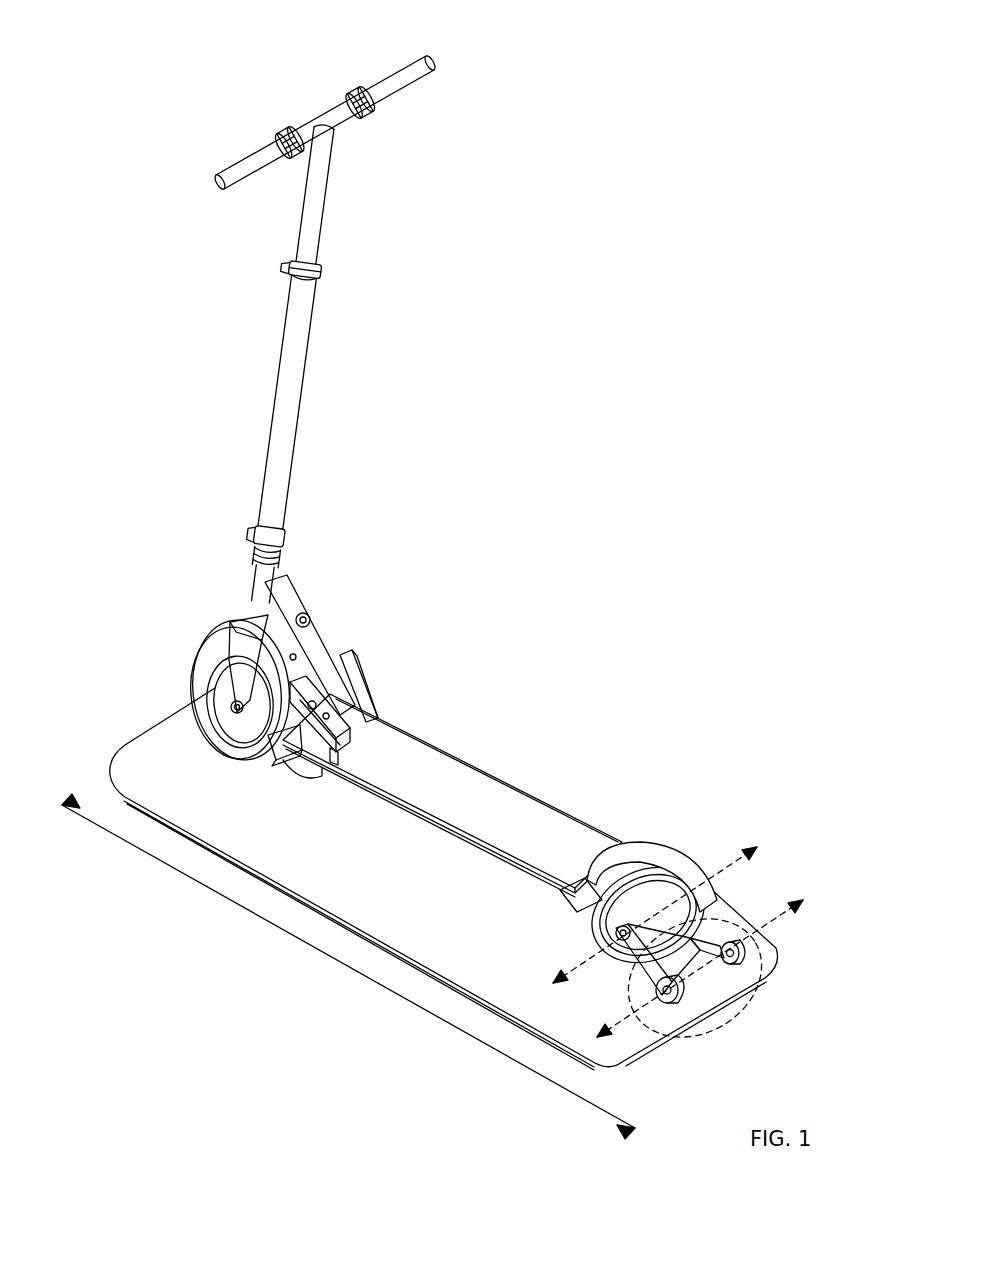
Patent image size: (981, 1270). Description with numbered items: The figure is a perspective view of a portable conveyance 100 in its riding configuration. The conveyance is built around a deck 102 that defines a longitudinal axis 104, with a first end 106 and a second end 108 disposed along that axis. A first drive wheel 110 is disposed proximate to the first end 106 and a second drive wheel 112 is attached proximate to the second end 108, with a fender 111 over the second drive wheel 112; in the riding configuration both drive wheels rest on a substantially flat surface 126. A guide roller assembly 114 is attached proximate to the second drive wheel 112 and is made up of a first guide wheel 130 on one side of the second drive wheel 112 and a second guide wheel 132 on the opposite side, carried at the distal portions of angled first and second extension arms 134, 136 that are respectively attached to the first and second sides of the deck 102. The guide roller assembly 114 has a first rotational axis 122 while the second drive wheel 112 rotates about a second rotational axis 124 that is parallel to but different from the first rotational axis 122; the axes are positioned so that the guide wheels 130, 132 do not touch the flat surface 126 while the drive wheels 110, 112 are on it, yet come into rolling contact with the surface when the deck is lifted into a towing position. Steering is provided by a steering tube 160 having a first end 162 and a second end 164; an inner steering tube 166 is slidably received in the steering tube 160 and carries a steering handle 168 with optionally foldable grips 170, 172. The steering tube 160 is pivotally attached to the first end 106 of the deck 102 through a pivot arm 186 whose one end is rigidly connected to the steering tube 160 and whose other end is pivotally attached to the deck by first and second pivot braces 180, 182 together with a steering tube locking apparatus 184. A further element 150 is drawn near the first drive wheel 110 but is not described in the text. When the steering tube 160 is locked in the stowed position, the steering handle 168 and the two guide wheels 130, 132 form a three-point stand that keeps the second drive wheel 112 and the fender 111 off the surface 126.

The portable conveyance 100 is at (210, 60).
The deck 102 is at (515, 785).
The longitudinal axis 104 is at (372, 985).
The first end 106 is at (296, 778).
The second end 108 is at (560, 905).
The first drive wheel 110 is at (192, 695).
The fender 111 is at (642, 848).
The second drive wheel 112 is at (712, 912).
The guide roller assembly 114 is at (712, 1018).
The first rotational axis 122 is at (620, 1040).
The second rotational axis 124 is at (585, 963).
The flat surface 126 is at (412, 897).
The first guide wheel 130 is at (672, 1008).
The second guide wheel 132 is at (745, 955).
The first extension arm 134 is at (625, 975).
The second extension arm 136 is at (722, 935).
The front wheel bracket 150 is at (270, 757).
The steering tube 160 is at (302, 430).
The first end 162 is at (238, 620).
The second end 164 is at (322, 272).
The inner steering tube 166 is at (318, 212).
The steering handle 168 is at (325, 118).
The foldable grip 170 is at (405, 78).
The foldable grip 172 is at (243, 168).
The first pivot brace 180 is at (386, 712).
The second pivot brace 182 is at (333, 766).
The steering tube locking apparatus 184 is at (363, 682).
The pivot arm 186 is at (298, 590).